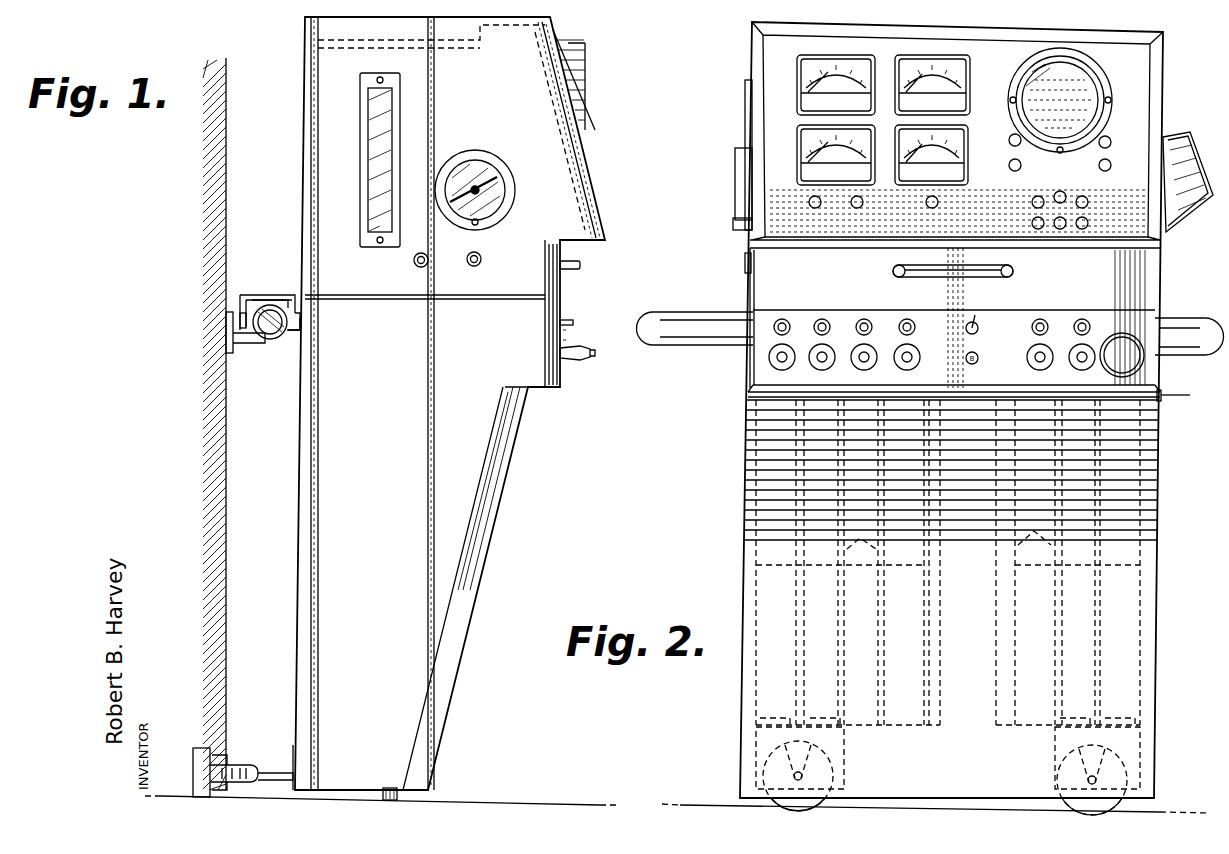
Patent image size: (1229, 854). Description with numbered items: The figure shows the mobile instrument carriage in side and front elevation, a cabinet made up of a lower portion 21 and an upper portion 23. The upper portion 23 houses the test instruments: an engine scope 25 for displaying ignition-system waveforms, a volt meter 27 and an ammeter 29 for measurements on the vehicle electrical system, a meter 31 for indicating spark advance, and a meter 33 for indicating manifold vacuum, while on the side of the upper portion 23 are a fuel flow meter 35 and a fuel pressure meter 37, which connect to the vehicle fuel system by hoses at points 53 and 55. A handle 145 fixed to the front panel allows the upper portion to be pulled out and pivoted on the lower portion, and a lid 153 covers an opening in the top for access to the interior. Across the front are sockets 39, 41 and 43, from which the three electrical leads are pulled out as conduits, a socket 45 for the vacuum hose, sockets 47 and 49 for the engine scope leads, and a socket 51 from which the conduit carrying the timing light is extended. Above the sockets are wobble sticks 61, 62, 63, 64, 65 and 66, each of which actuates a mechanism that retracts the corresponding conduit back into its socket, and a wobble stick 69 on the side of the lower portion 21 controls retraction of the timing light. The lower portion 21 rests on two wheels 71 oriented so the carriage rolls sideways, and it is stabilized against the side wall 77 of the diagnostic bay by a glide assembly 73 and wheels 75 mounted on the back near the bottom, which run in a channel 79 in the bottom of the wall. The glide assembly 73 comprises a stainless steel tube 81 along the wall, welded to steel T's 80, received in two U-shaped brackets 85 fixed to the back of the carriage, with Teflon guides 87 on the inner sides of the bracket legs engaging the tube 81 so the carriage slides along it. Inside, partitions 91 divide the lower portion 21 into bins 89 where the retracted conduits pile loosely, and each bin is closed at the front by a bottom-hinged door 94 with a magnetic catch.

In FIG. 1, the lower portion 21 is at (462, 490).
In FIG. 2, the lower portion 21 is at (765, 504).
In FIG. 1, the upper portion 23 is at (558, 190).
In FIG. 2, the upper portion 23 is at (1125, 280).
In FIG. 1, the engine scope 25 is at (586, 50).
In FIG. 2, the engine scope 25 is at (1082, 90).
In FIG. 1, the volt meter 27 is at (568, 80).
In FIG. 2, the volt meter 27 is at (842, 55).
In FIG. 1, the ammeter 29 is at (577, 160).
In FIG. 2, the ammeter 29 is at (802, 142).
In FIG. 2, the meter 31 is at (934, 55).
In FIG. 2, the meter 33 is at (918, 182).
In FIG. 1, the meter 35 is at (368, 148).
In FIG. 2, the meter 35 is at (745, 97).
In FIG. 1, the meter 37 is at (477, 165).
In FIG. 2, the meter 37 is at (735, 188).
In FIG. 1, the socket 39 is at (563, 366).
In FIG. 2, the socket 39 is at (769, 360).
In FIG. 2, the socket 41 is at (822, 370).
In FIG. 2, the socket 43 is at (865, 370).
In FIG. 2, the socket 45 is at (907, 370).
In FIG. 2, the socket 47 is at (1040, 370).
In FIG. 2, the socket 49 is at (1082, 370).
In FIG. 2, the socket 51 is at (1136, 360).
In FIG. 1, the point 53 is at (413, 262).
In FIG. 1, the point 55 is at (482, 262).
In FIG. 2, the point 55 is at (745, 262).
In FIG. 1, the wobble stick 61 is at (574, 323).
In FIG. 2, the wobble stick 61 is at (786, 319).
In FIG. 2, the wobble stick 62 is at (824, 319).
In FIG. 2, the wobble stick 63 is at (867, 319).
In FIG. 2, the wobble stick 64 is at (910, 319).
In FIG. 2, the wobble stick 65 is at (1040, 319).
In FIG. 2, the wobble stick 66 is at (1082, 319).
In FIG. 2, the wobble stick 69 is at (1175, 402).
In FIG. 1, the wheels 71 is at (397, 795).
In FIG. 2, the wheels 71 is at (790, 808).
In FIG. 1, the glide assembly 73 is at (254, 292).
In FIG. 1, the wheels 75 is at (240, 764).
In FIG. 1, the side wall 77 is at (227, 506).
In FIG. 1, the channel 79 is at (193, 752).
In FIG. 1, the steel T's 80 is at (226, 352).
In FIG. 1, the stainless steel tube 81 is at (268, 340).
In FIG. 2, the stainless steel tube 81 is at (727, 346).
In FIG. 1, the U-shaped brackets 85 is at (276, 298).
In FIG. 1, the Teflon guides 87 is at (240, 318).
In FIG. 2, the bins 89 is at (760, 545).
In FIG. 2, the partitions 91 is at (1080, 523).
In FIG. 2, the door 94 is at (910, 612).
In FIG. 1, the handle 145 is at (581, 265).
In FIG. 2, the handle 145 is at (900, 264).
In FIG. 1, the lid 153 is at (318, 50).